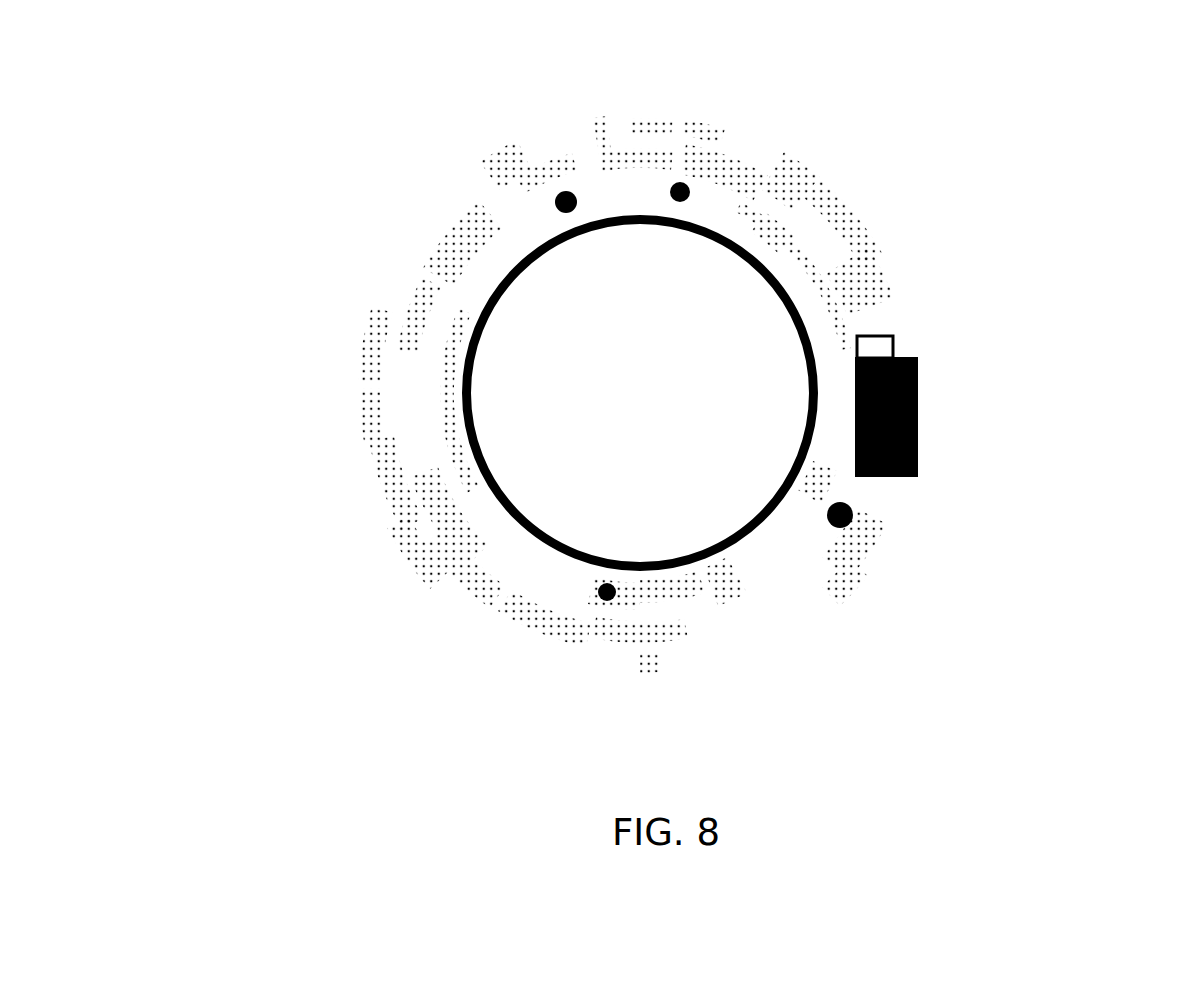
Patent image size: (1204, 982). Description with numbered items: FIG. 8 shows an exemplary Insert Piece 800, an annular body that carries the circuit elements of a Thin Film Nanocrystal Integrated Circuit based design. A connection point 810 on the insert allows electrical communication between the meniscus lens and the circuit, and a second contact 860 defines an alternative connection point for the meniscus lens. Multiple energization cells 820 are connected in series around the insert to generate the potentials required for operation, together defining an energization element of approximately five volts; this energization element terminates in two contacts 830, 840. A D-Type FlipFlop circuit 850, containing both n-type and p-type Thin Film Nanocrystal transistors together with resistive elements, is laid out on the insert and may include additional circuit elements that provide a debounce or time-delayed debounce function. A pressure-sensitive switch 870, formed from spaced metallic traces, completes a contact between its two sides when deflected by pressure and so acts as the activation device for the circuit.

The ring-shaped circuit board assembly 800 is at (520, 360).
The connection point 810 is at (508, 393).
The energization cells 820 is at (310, 513).
The contact 830 is at (980, 608).
The contact 840 is at (980, 547).
The D-Type FlipFlop circuit 850 is at (973, 406).
The second contact 860 is at (996, 282).
The pressure-sensitive switch 870 is at (930, 174).